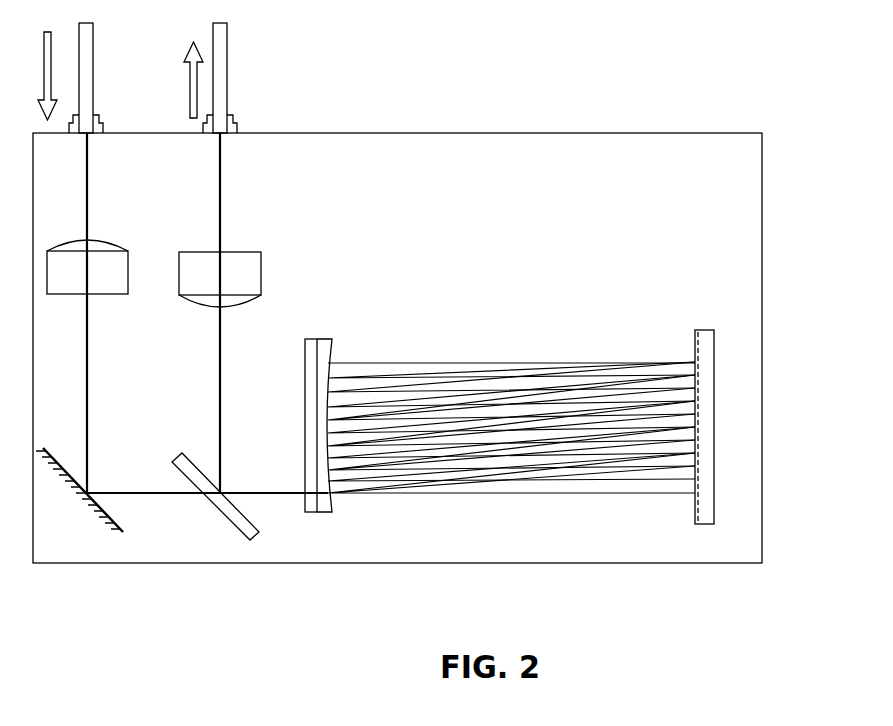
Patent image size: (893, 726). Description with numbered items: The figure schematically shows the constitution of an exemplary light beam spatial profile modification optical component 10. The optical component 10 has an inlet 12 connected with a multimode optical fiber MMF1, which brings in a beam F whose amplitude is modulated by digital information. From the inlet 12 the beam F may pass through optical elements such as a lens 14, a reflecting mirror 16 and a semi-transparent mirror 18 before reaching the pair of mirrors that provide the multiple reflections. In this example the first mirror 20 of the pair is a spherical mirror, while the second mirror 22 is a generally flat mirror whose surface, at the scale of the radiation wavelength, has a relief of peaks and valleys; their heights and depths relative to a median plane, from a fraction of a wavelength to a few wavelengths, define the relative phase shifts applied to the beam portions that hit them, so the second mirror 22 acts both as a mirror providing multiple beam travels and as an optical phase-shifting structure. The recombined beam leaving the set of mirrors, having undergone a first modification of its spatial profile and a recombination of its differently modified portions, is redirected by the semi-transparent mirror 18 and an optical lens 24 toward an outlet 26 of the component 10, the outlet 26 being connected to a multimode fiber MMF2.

The optical component 10 is at (515, 112).
The multimode optical fiber MMF1 is at (94, 101).
The multimode fiber MMF2 is at (228, 65).
The inlet 12 is at (103, 128).
The outlet 26 is at (237, 128).
The beam F is at (88, 200).
The lens 14 is at (103, 240).
The optical lens 24 is at (228, 305).
The reflecting mirror 16 is at (112, 517).
The semi-transparent mirror 18 is at (250, 517).
The first mirror 20 is at (332, 350).
The second mirror 22 is at (695, 340).